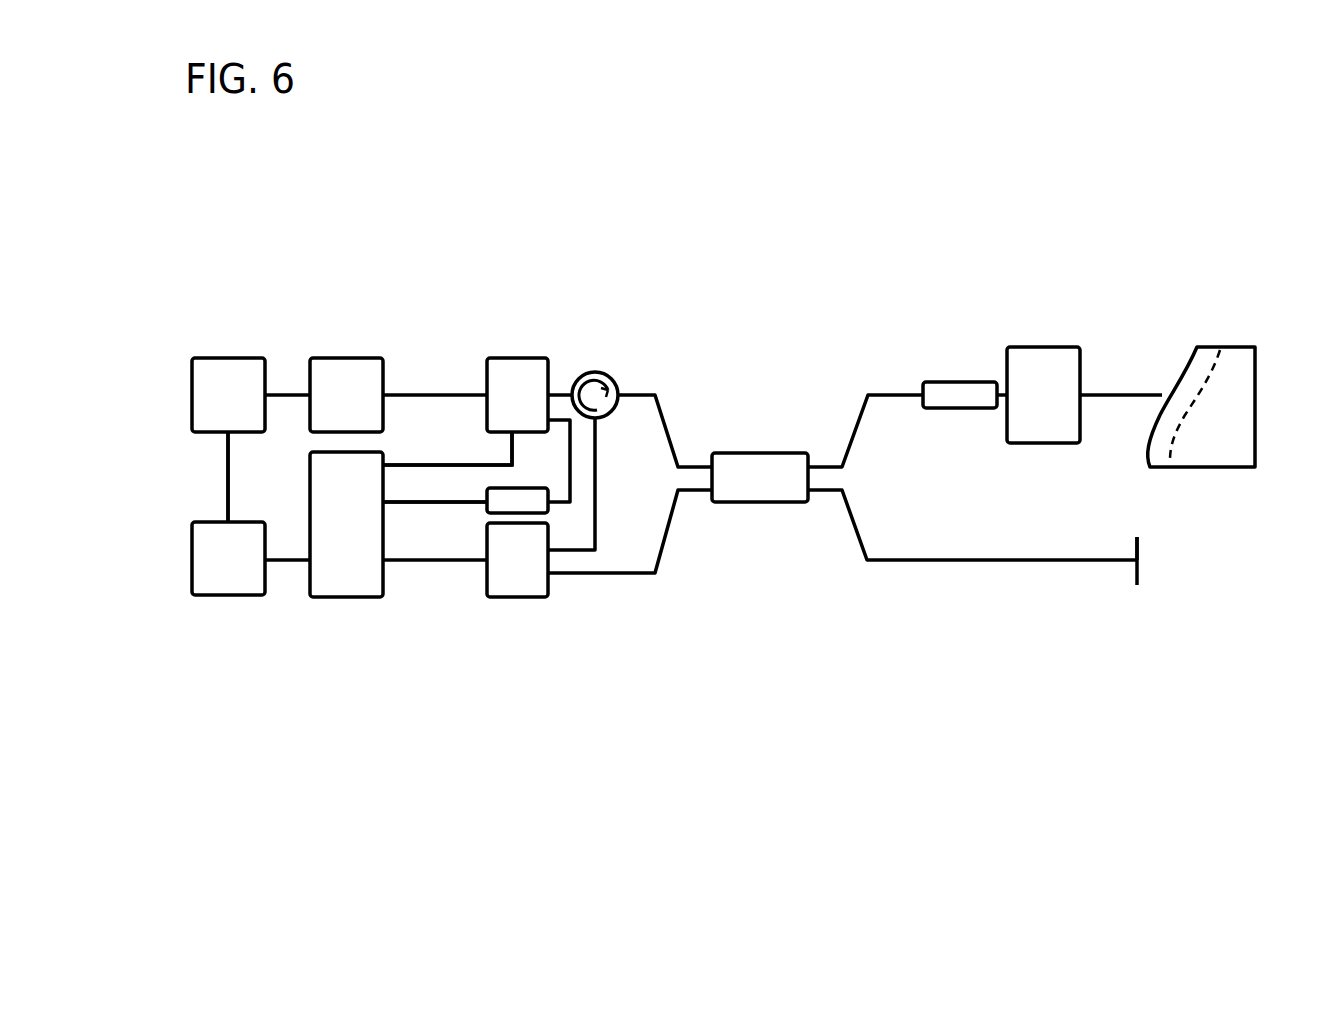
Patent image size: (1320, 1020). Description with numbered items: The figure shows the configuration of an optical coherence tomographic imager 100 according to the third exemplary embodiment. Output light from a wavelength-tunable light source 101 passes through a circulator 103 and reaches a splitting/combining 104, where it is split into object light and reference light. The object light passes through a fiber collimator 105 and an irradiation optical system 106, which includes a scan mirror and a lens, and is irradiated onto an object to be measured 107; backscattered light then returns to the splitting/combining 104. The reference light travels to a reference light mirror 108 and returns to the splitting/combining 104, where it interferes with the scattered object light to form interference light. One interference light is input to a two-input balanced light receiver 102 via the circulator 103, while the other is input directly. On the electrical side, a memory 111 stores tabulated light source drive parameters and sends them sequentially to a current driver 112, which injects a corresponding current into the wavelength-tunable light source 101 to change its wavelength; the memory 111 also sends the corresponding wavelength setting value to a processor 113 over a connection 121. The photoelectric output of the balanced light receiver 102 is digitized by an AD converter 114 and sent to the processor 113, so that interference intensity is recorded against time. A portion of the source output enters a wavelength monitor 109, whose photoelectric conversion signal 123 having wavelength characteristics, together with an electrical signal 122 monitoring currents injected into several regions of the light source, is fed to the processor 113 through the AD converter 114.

The optical coherence tomographic imager 100 is at (1267, 204).
The wavelength-tunable light source 101 is at (520, 358).
The two-input balanced light receiver 102 is at (538, 597).
The circulator 103 is at (605, 372).
The splitting/combining 104 is at (767, 453).
The fiber collimator 105 is at (957, 382).
The irradiation optical system 106 is at (1040, 360).
The object to be measured 107 is at (1227, 347).
The reference light mirror 108 is at (1137, 585).
The wavelength monitor 109 is at (505, 513).
The memory 111 is at (223, 358).
The current driver 112 is at (343, 358).
The processor 113 is at (220, 595).
The AD converter 114 is at (340, 597).
The control signal line 121 is at (228, 475).
The electrical signal 122 is at (410, 465).
The photoelectric conversion signal 123 is at (452, 502).